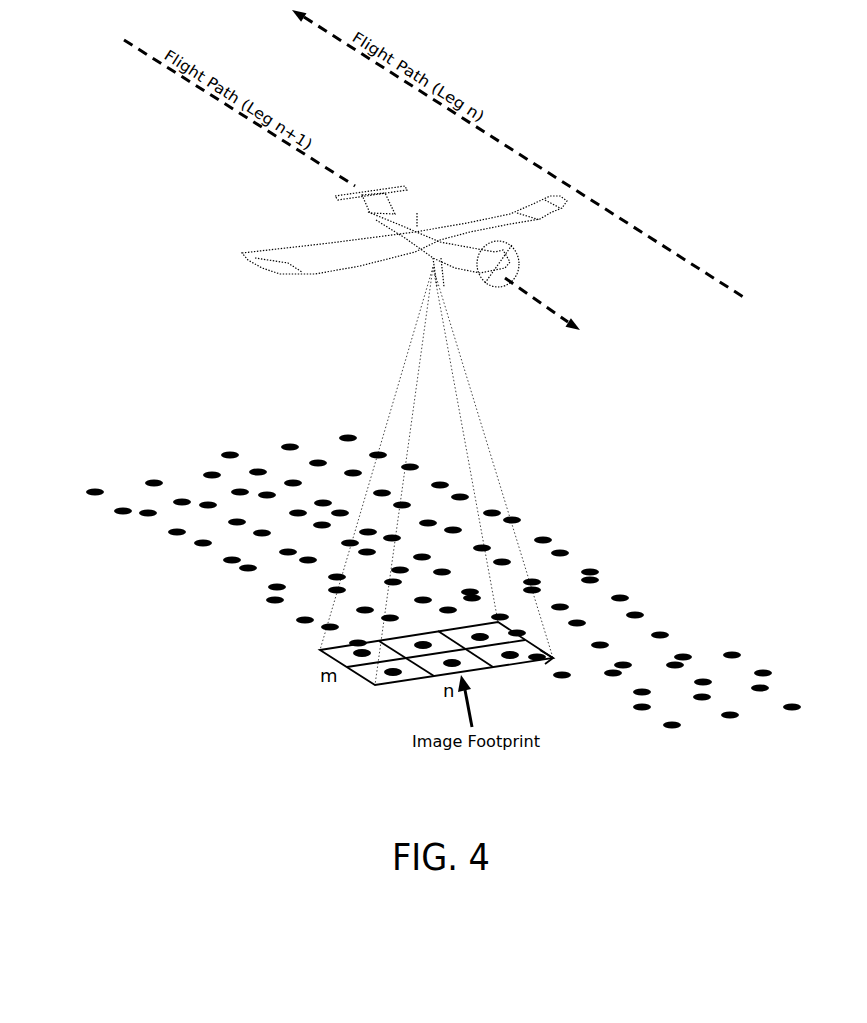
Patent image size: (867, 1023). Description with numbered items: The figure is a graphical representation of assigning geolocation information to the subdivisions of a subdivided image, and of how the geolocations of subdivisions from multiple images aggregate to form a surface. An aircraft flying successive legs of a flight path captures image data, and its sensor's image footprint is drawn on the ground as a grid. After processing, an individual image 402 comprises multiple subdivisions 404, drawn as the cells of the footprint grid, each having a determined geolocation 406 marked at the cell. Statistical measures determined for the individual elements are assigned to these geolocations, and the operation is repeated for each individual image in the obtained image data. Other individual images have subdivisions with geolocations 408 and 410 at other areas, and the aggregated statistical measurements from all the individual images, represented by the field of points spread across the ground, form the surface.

The individual image 402 is at (348, 668).
The subdivision 404 is at (388, 677).
The determined geolocation 406 is at (352, 653).
The geolocation 408 is at (540, 661).
The geolocation 410 is at (548, 656).